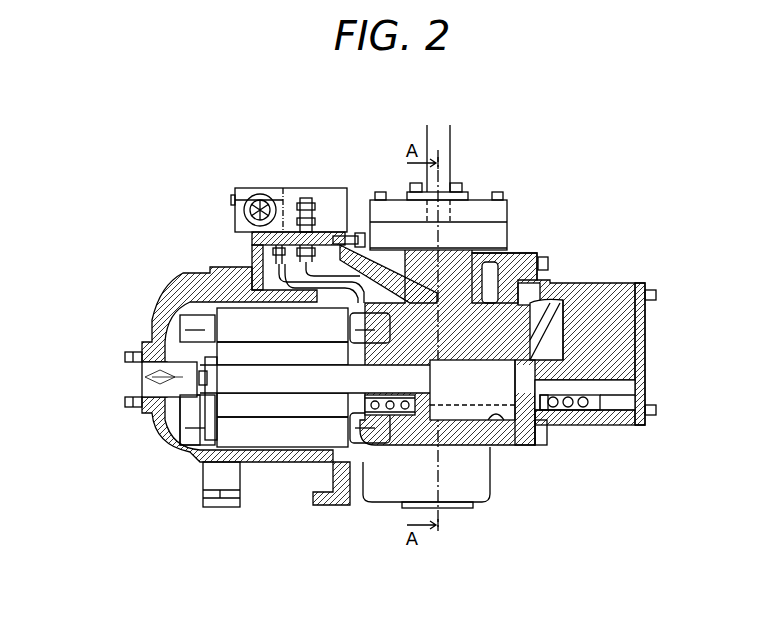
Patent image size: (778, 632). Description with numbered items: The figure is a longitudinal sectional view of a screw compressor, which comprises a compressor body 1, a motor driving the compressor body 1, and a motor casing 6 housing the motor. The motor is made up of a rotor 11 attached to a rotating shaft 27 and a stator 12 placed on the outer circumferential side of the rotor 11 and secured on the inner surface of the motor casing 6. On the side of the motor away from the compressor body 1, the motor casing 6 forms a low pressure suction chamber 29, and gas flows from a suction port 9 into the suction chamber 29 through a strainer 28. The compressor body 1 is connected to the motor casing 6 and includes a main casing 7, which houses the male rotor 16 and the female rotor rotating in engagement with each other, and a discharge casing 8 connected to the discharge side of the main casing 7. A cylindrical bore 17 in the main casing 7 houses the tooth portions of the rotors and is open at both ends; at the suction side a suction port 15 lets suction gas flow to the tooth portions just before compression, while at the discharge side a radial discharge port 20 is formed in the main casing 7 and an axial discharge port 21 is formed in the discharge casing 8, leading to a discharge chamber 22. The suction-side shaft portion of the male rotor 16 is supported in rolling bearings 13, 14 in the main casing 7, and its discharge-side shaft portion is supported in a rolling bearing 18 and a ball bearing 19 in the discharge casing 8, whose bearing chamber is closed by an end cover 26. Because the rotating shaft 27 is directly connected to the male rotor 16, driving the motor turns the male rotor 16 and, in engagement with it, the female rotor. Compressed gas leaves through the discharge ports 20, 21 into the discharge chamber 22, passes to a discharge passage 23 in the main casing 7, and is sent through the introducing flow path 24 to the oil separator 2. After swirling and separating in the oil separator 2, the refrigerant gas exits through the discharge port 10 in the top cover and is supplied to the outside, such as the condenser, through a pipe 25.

The compressor body 1 is at (318, 178).
The oil separator 2 is at (508, 205).
The motor casing 6 is at (183, 305).
The main casing 7 is at (418, 275).
The discharge casing 8 is at (613, 425).
The suction port 9 is at (133, 378).
The discharge port 10 is at (450, 185).
The rotor 11 is at (225, 407).
The stator 12 is at (258, 430).
The rolling bearing 13 is at (340, 500).
The rolling bearing 14 is at (400, 420).
The suction port 15 is at (408, 445).
The male rotor 16 is at (463, 397).
The cylindrical bore 17 is at (490, 440).
The rolling bearing 18 is at (548, 423).
The ball bearing 19 is at (580, 415).
The discharge port 20 is at (580, 290).
The discharge port 21 is at (605, 347).
The discharge chamber 22 is at (620, 325).
The discharge passage 23 is at (550, 258).
The introducing flow path 24 is at (505, 265).
The pipe 25 is at (452, 130).
The end cover 26 is at (645, 385).
The rotating shaft 27 is at (297, 380).
The strainer 28 is at (125, 400).
The suction chamber 29 is at (170, 428).